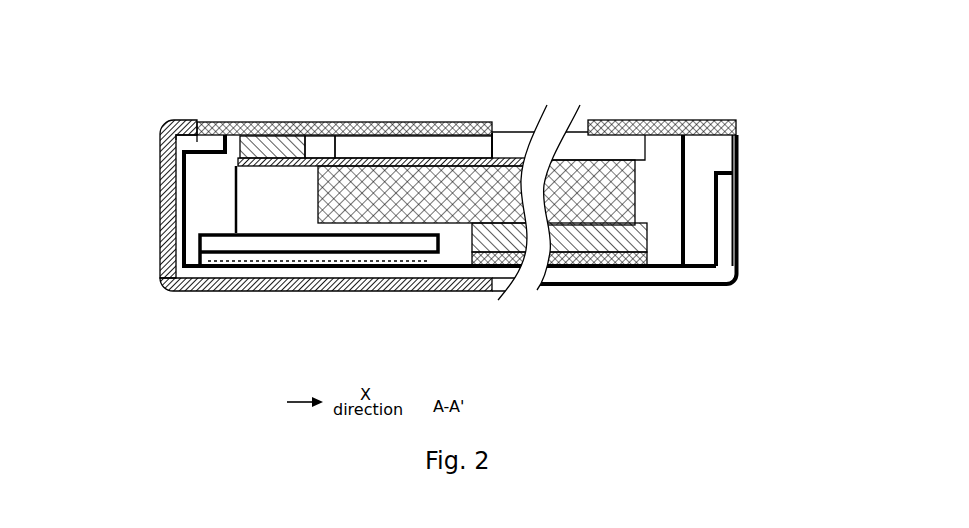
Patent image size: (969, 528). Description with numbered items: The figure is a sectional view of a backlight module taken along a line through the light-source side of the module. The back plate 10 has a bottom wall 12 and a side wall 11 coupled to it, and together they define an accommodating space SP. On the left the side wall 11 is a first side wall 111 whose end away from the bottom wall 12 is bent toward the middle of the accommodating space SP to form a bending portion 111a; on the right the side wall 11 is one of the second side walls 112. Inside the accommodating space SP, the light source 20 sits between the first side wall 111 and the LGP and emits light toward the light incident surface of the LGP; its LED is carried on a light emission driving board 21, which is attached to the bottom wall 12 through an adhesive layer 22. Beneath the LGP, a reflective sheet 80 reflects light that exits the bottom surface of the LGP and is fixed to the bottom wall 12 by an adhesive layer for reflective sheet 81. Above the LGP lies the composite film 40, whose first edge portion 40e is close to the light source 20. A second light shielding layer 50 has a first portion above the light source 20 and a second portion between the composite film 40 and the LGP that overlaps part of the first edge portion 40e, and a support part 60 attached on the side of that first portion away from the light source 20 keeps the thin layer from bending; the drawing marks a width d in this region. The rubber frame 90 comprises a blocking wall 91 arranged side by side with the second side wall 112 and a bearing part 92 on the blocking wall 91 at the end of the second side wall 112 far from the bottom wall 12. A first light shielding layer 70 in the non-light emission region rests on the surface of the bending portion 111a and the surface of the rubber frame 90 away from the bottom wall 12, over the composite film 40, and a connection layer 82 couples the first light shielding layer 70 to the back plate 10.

The back plate 10 is at (110, 223).
The side wall 11 is at (458, 202).
The first side wall 111 is at (177, 242).
The bending portion 111a is at (197, 145).
The second side wall 112 is at (733, 227).
The bottom wall 12 is at (235, 275).
The light source 20 is at (295, 225).
The light emission driving board 21 is at (353, 245).
The adhesive layer 22 is at (410, 262).
The composite film 40 is at (512, 132).
The first edge portion 40e is at (425, 145).
The second light shielding layer 50 is at (348, 160).
The support part 60 is at (276, 139).
The first light shielding layer 70 is at (237, 123).
The reflective sheet 80 is at (500, 250).
The adhesive layer for reflective sheet 81 is at (517, 258).
The connection layer 82 is at (162, 186).
The rubber frame 90 is at (790, 150).
The blocking wall 91 is at (712, 200).
The bearing part 92 is at (722, 162).
The accommodating space SP is at (210, 170).
The light guide plate LGP is at (602, 178).
The distance d is at (335, 114).